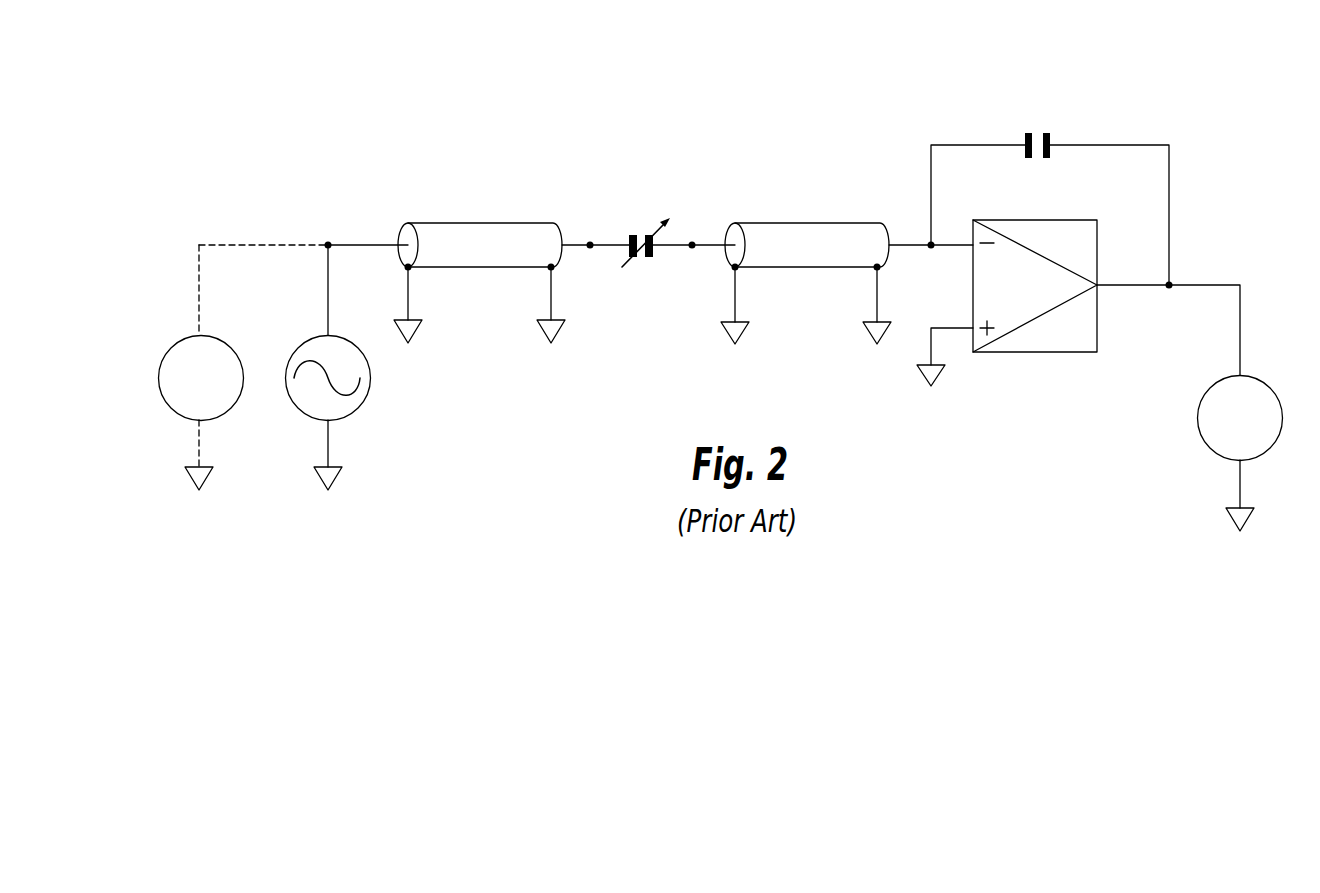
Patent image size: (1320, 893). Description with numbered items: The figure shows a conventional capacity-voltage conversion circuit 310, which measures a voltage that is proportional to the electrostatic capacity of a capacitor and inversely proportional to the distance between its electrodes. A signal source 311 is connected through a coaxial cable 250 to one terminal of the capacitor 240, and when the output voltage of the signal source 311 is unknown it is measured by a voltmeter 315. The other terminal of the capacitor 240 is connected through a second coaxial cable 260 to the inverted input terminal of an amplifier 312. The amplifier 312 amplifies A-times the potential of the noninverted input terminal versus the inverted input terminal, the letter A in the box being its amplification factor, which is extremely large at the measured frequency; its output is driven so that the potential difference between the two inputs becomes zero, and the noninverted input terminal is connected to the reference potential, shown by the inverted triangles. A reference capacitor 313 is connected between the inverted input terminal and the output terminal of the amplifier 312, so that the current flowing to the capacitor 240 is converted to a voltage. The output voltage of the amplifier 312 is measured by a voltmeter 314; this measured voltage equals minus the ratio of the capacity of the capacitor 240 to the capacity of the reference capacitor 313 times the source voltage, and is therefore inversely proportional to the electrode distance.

The capacity-voltage conversion circuit 310 is at (342, 70).
The voltmeter 315 is at (176, 340).
The signal source 311 is at (352, 406).
The coaxial cable 250 is at (483, 222).
The capacitor 240 is at (648, 257).
The coaxial cable 260 is at (810, 222).
The reference capacitor 313 is at (1045, 133).
The amplifier 312 is at (1035, 352).
The voltmeter 314 is at (1247, 374).